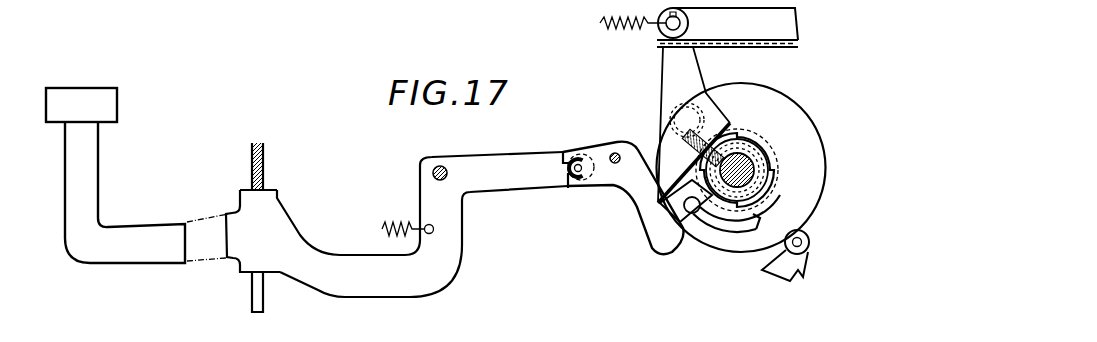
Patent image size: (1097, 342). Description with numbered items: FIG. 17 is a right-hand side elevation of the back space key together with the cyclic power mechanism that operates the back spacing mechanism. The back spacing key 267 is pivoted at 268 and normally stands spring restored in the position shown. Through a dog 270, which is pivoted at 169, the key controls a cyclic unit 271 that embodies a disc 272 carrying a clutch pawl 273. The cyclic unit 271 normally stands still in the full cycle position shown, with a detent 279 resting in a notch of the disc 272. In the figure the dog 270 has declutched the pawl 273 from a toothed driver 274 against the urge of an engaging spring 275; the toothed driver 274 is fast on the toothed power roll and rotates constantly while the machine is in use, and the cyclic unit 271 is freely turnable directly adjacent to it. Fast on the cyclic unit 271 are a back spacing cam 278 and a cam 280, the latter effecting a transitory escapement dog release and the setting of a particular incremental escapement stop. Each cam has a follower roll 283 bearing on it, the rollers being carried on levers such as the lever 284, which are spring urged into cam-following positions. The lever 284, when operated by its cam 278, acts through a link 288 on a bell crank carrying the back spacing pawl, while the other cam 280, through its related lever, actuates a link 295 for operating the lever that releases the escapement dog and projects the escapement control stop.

The back spacing key 267 is at (139, 232).
The pivot of back spacing key 268 is at (433, 168).
The pivot of dog 169 is at (611, 155).
The dog 270 is at (650, 233).
The cyclic unit 271 is at (712, 256).
The disc 272 is at (751, 252).
The clutch pawl 273 is at (700, 233).
The toothed driver 274 is at (770, 143).
The engaging spring 275 is at (668, 127).
The back spacing cam 278 is at (772, 133).
The detent 279 is at (800, 278).
The cam 280 is at (752, 128).
The follower roll 283 is at (657, 160).
The lever 284 is at (663, 77).
The link 288 is at (750, 48).
The link 295 is at (785, 19).